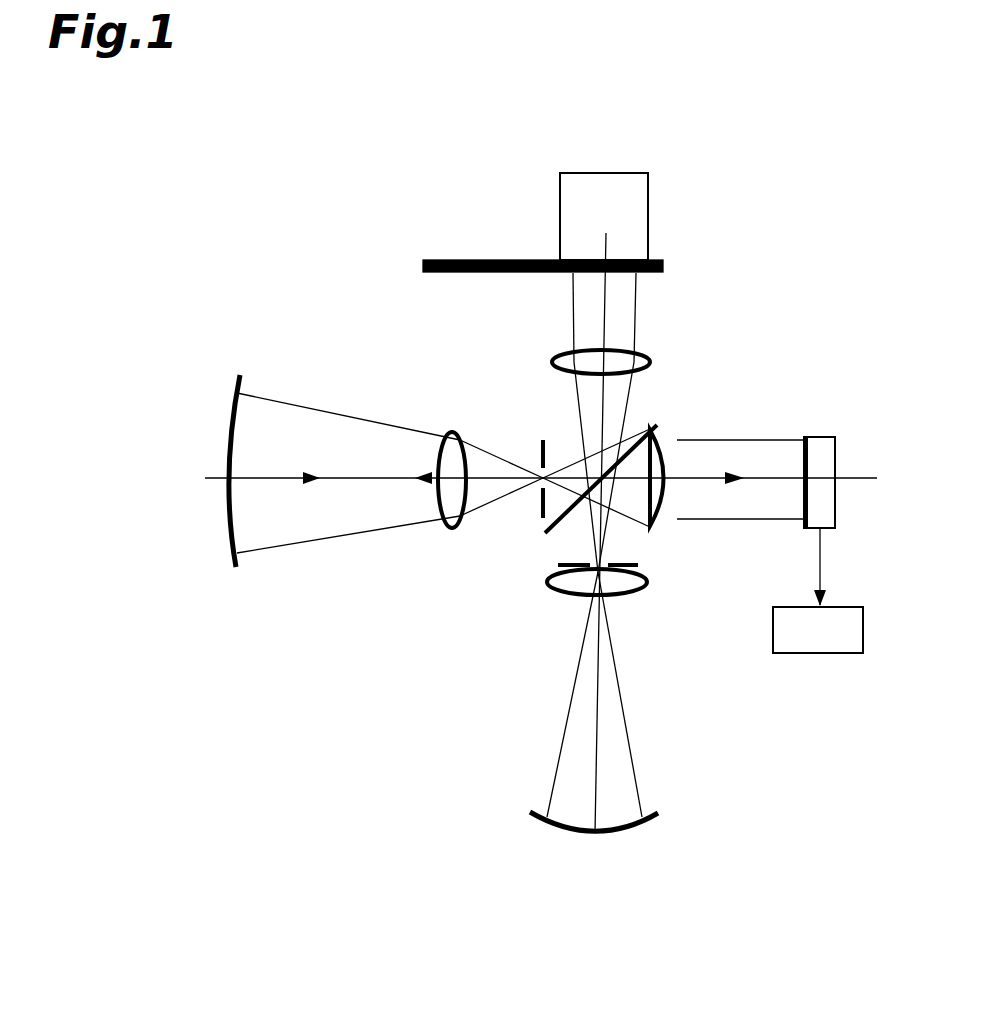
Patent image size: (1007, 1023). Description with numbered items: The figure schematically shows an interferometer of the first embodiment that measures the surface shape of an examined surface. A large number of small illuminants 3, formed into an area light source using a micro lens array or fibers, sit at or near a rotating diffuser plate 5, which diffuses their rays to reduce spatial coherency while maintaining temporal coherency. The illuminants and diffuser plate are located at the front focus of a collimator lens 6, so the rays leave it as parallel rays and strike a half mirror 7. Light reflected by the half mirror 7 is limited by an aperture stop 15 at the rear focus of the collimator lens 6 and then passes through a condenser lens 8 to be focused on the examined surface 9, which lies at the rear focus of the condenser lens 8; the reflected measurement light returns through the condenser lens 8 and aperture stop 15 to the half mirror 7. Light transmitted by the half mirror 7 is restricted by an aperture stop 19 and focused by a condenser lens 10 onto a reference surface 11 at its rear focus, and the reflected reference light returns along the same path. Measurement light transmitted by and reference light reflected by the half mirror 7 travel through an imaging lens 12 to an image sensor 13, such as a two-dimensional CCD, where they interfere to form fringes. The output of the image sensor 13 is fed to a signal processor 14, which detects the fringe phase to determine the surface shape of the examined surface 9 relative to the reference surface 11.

The small illuminants 3 is at (630, 187).
The rotating diffuser plate 5 is at (638, 262).
The collimator lens 6 is at (655, 361).
The half mirror 7 is at (605, 470).
The condenser lens 8 is at (447, 432).
The examined surface 9 is at (236, 425).
The condenser lens 10 is at (638, 596).
The reference surface 11 is at (565, 827).
The imaging lens 12 is at (665, 430).
The image sensor 13 is at (820, 445).
The signal processor 14 is at (818, 630).
The aperture stop 15 is at (541, 507).
The aperture stop 19 is at (630, 552).